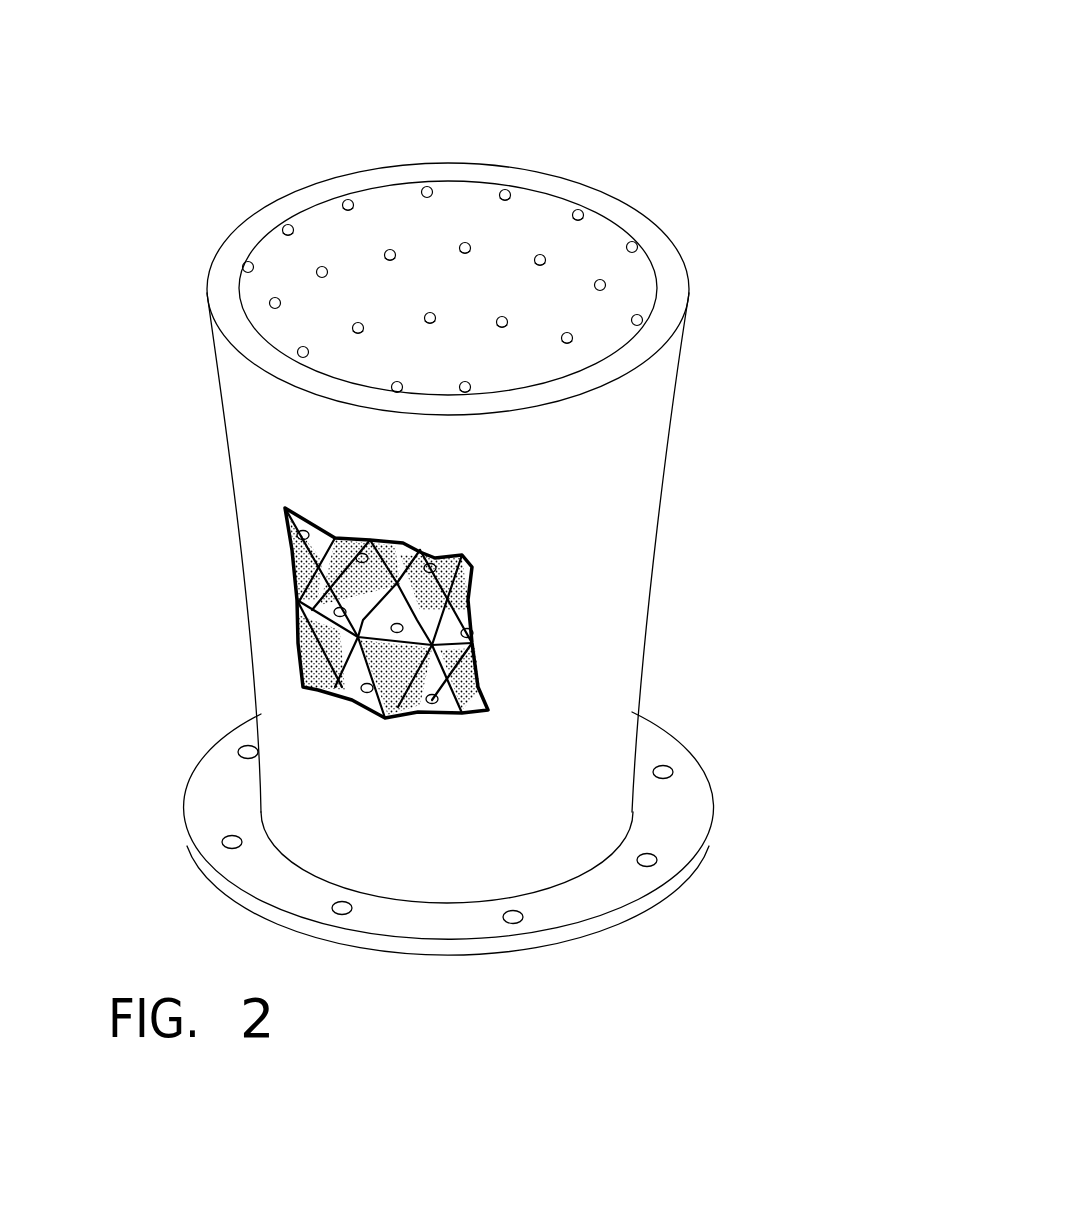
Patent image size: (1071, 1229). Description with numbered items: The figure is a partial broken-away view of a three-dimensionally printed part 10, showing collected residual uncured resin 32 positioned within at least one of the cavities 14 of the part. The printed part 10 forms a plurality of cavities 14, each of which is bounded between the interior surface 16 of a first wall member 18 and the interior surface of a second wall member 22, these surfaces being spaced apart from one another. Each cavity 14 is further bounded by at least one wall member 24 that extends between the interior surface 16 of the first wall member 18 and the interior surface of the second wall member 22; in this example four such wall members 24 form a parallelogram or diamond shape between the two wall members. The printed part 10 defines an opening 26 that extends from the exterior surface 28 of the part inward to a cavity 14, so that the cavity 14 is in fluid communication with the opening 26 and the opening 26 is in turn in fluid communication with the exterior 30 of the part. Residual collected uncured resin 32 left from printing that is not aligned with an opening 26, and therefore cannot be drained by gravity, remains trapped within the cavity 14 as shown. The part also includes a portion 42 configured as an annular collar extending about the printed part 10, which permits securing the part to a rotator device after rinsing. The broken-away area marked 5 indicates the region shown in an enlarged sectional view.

The 3D printed part 10 is at (650, 56).
The cavity 14 is at (365, 524).
The interior surface of first wall member 16 is at (340, 528).
The first wall member 18 is at (435, 273).
The second wall member 22 is at (592, 440).
The wall member 24 is at (378, 552).
The opening 26 is at (463, 242).
The exterior surface 28 is at (307, 228).
The exterior 30 is at (377, 306).
The residual collected uncured resin 32 is at (297, 560).
The portion 42 is at (668, 823).
The section view indicator 5 is at (410, 617).